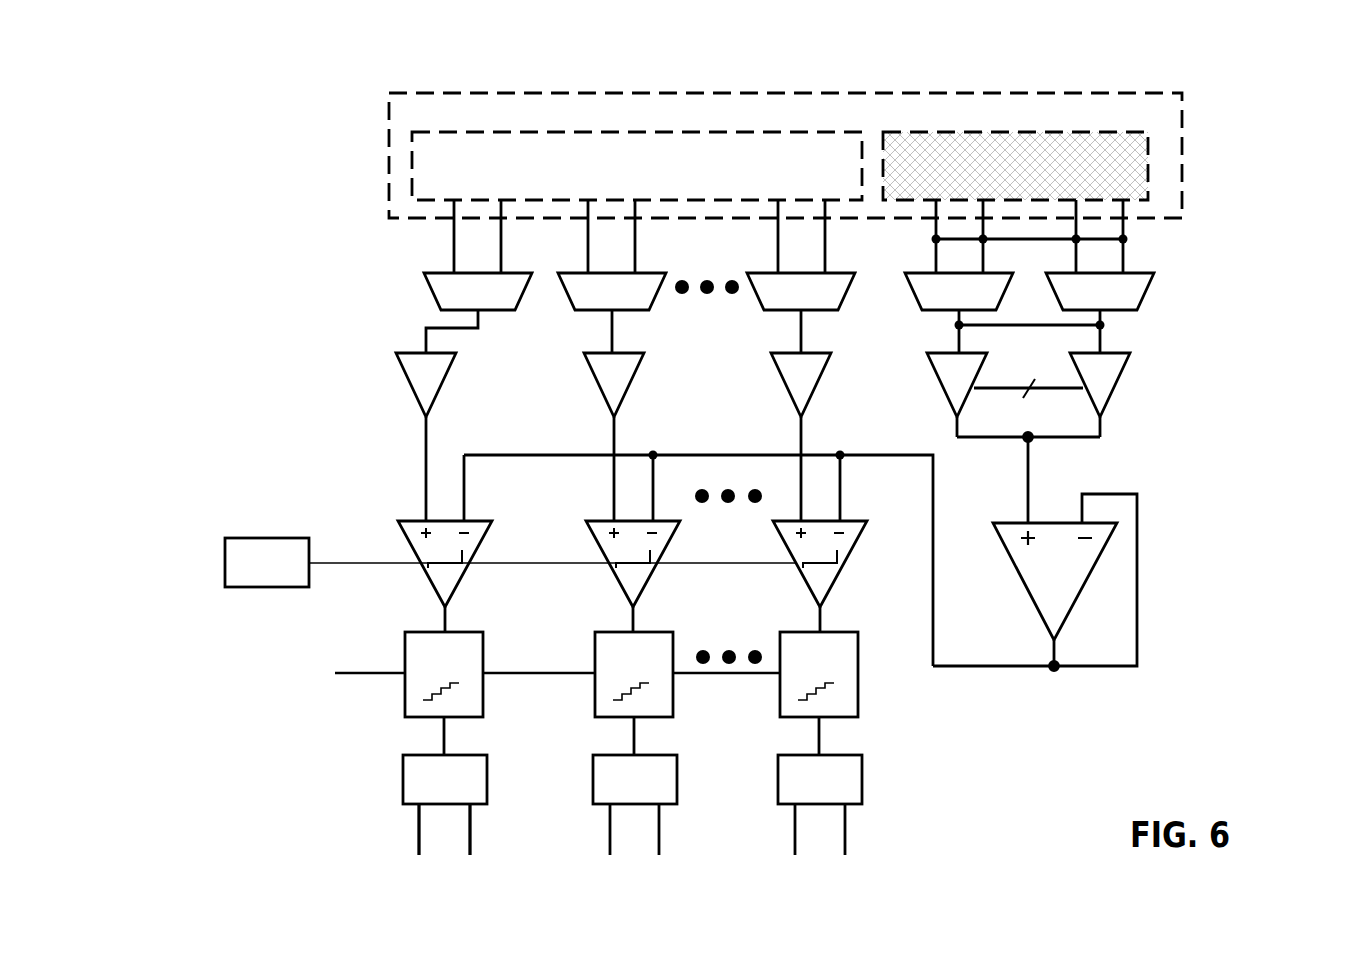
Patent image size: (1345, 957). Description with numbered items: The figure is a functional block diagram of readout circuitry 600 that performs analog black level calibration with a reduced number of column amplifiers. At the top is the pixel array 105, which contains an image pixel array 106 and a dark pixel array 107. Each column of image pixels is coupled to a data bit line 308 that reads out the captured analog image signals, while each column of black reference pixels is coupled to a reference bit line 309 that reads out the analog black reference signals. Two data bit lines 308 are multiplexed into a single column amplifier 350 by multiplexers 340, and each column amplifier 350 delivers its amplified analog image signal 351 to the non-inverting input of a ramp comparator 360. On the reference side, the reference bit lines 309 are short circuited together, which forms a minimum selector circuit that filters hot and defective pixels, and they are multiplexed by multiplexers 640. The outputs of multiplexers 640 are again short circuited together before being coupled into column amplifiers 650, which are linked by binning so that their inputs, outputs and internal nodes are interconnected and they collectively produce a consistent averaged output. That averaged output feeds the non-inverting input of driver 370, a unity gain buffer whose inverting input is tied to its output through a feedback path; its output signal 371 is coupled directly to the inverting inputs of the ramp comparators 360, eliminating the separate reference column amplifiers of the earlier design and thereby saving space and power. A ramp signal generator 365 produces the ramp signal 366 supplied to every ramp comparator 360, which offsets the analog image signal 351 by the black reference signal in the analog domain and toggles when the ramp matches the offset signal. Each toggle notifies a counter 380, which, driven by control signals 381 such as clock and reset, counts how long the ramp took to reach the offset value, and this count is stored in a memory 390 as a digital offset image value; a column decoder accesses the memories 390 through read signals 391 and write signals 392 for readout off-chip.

The readout circuitry 600 is at (1272, 90).
The pixel array 105 is at (785, 155).
The image pixel array 106 is at (637, 166).
The dark pixel array 107 is at (1015, 166).
The data bit lines 308 is at (451, 240).
The reference bit lines 309 is at (1133, 240).
The multiplexers 340 is at (639, 276).
The column amplifiers 350 is at (613, 437).
The analog image signals 351 is at (407, 482).
The ramp comparator 360 is at (422, 575).
The ramp signal generator 365 is at (511, 562).
The ramp signal 366 is at (350, 561).
The driver 370 is at (1035, 554).
The output signal 371 is at (998, 669).
The counters 380 is at (631, 693).
The control signals 381 is at (540, 673).
The memories 390 is at (632, 805).
The read signals 391 is at (473, 830).
The write signals 392 is at (417, 830).
The multiplexers 640 is at (1029, 276).
The column amplifiers 650 is at (1028, 397).